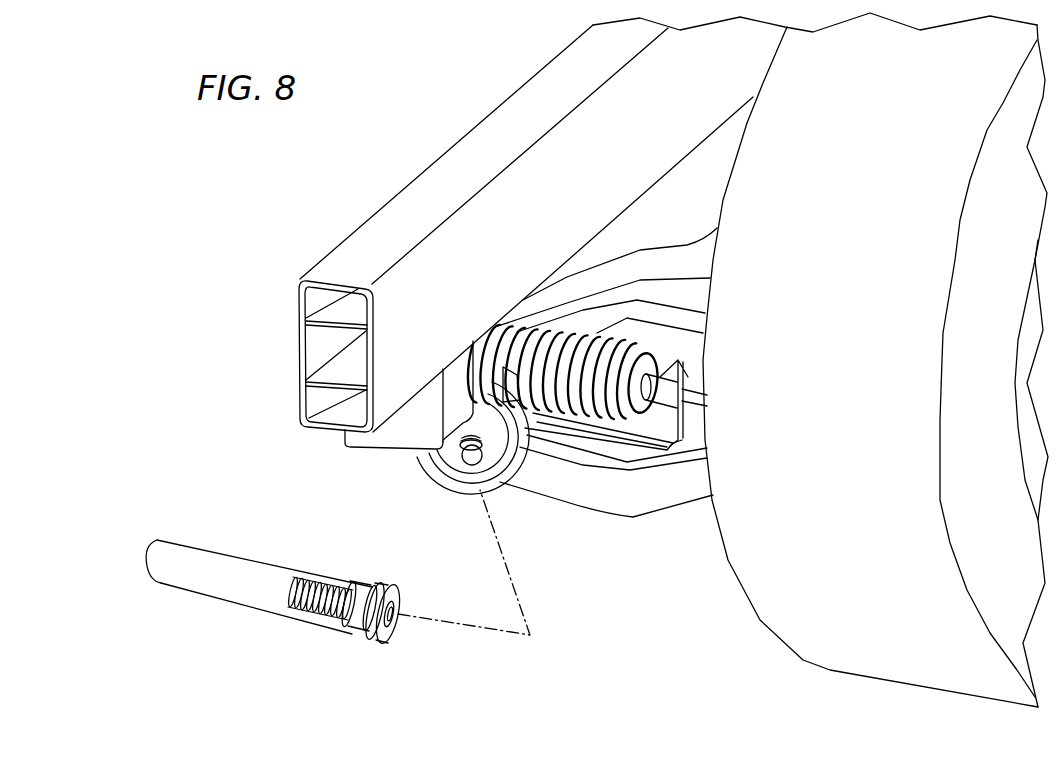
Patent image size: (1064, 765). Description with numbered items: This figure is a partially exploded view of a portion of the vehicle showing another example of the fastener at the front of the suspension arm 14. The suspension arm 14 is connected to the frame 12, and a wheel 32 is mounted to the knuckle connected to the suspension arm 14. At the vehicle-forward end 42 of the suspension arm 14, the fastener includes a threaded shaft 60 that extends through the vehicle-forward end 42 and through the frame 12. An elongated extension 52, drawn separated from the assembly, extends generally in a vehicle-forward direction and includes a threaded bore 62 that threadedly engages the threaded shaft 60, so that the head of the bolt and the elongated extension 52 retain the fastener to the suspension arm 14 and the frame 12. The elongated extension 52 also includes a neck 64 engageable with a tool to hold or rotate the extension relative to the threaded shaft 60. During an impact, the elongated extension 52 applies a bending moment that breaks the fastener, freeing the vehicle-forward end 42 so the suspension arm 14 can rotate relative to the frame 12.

The frame 12 is at (497, 135).
The suspension arm 14 is at (617, 493).
The wheel 32 is at (790, 600).
The vehicle-forward end 42 is at (583, 488).
The elongated extension 52 is at (220, 607).
The threaded shaft 60 is at (470, 464).
The threaded bore 62 is at (390, 628).
The neck 64 is at (373, 582).